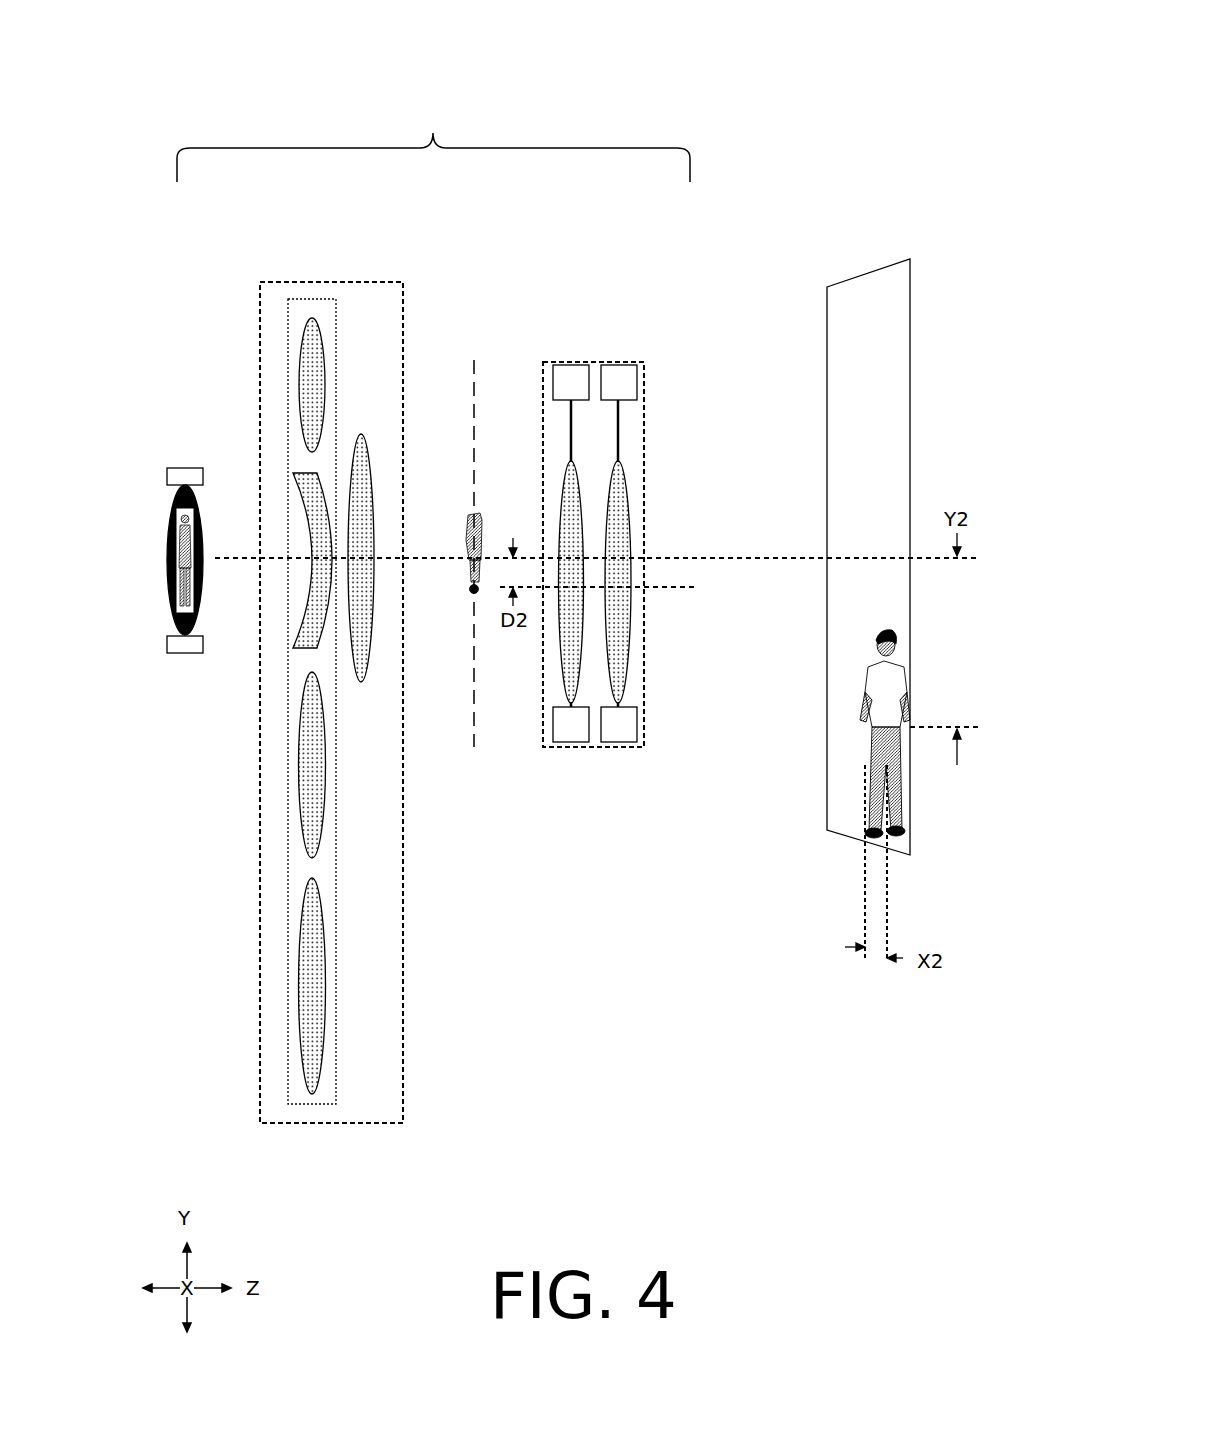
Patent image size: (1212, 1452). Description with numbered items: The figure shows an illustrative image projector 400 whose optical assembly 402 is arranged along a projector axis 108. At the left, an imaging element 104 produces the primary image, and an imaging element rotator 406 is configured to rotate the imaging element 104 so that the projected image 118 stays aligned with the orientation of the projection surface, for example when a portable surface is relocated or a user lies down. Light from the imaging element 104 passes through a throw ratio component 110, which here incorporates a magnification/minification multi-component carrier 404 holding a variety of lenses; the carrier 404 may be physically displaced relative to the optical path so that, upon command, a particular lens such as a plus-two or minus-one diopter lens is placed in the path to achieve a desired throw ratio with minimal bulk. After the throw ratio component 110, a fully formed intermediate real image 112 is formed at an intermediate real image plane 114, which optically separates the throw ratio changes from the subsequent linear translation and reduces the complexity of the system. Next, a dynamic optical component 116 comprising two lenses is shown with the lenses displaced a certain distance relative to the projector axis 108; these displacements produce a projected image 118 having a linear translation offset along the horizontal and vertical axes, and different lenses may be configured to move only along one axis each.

The image projector 400 is at (894, 27).
The optical assembly 402 is at (433, 127).
The imaging element 104 is at (186, 468).
The projector axis 108 is at (400, 556).
The intermediate real image 112 is at (485, 505).
The intermediate real image plane 114 is at (476, 715).
The dynamic optical component 116 is at (582, 747).
The projected image 118 is at (885, 596).
The magnification/minification multi-component carrier 404 is at (337, 835).
The throw ratio component 110 is at (403, 1075).
The imaging element rotator 406 is at (187, 654).